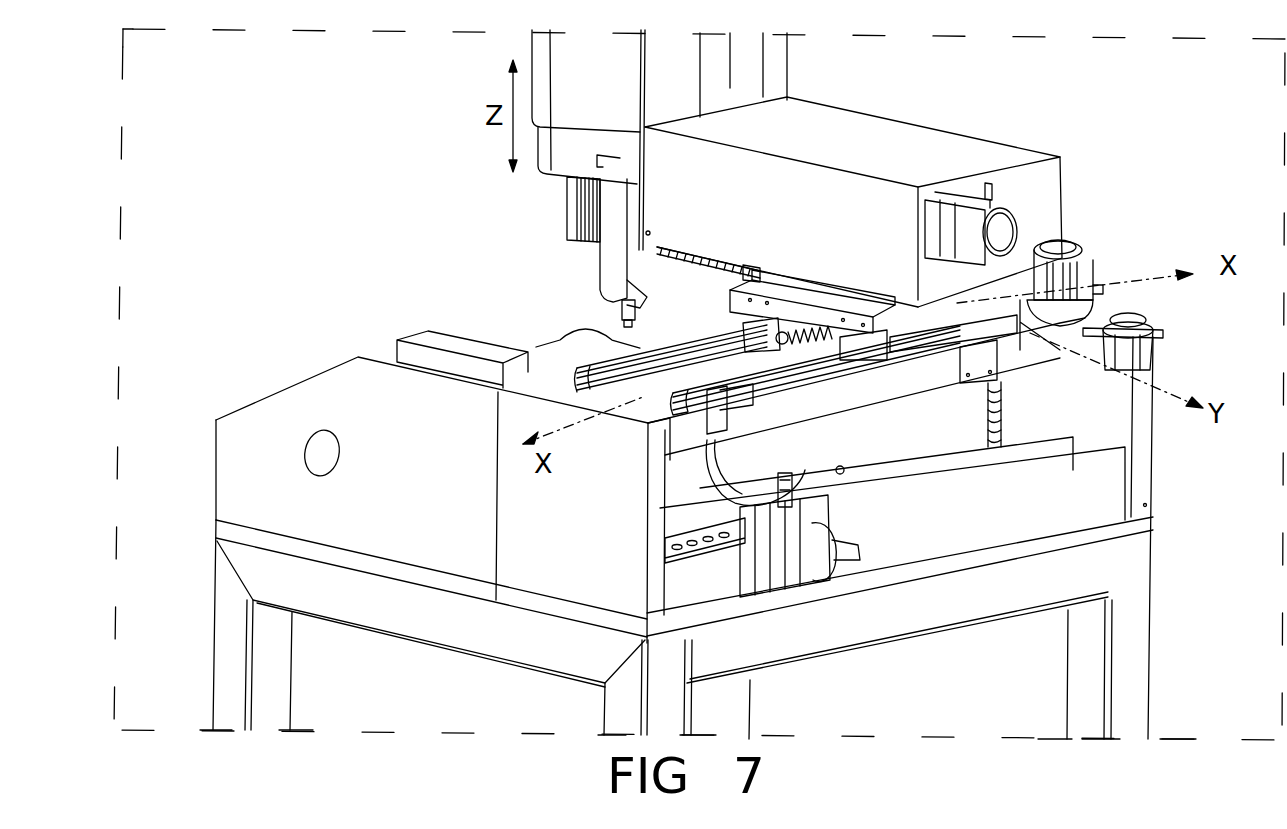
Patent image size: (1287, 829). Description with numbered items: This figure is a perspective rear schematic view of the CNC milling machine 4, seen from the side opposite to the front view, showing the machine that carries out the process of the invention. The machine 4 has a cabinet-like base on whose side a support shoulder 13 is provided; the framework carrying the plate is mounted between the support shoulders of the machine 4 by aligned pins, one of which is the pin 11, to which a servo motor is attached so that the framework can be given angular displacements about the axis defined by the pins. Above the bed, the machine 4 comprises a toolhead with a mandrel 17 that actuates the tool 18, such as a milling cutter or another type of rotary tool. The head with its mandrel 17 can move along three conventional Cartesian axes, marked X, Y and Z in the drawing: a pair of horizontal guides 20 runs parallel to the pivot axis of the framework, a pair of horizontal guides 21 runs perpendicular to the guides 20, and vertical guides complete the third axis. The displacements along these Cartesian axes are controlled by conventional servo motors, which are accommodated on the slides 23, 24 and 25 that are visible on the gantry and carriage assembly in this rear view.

The CNC milling machine 4 is at (366, 260).
The pin 11 is at (318, 455).
The support shoulder 13 is at (377, 527).
The mandrel 17 is at (613, 270).
The tool 18 is at (623, 327).
The horizontal guides 20 is at (622, 385).
The horizontal guides 21 is at (705, 250).
The slide 23 is at (1010, 320).
The slide 24 is at (925, 208).
The slide 25 is at (598, 157).